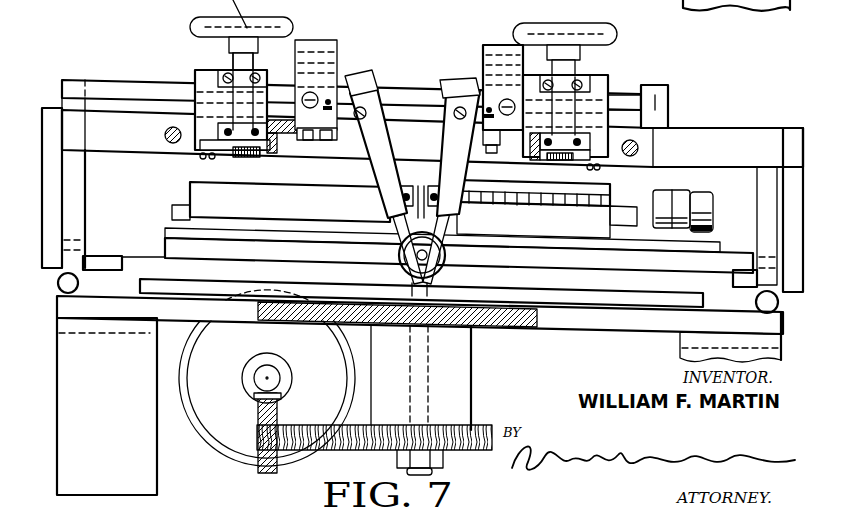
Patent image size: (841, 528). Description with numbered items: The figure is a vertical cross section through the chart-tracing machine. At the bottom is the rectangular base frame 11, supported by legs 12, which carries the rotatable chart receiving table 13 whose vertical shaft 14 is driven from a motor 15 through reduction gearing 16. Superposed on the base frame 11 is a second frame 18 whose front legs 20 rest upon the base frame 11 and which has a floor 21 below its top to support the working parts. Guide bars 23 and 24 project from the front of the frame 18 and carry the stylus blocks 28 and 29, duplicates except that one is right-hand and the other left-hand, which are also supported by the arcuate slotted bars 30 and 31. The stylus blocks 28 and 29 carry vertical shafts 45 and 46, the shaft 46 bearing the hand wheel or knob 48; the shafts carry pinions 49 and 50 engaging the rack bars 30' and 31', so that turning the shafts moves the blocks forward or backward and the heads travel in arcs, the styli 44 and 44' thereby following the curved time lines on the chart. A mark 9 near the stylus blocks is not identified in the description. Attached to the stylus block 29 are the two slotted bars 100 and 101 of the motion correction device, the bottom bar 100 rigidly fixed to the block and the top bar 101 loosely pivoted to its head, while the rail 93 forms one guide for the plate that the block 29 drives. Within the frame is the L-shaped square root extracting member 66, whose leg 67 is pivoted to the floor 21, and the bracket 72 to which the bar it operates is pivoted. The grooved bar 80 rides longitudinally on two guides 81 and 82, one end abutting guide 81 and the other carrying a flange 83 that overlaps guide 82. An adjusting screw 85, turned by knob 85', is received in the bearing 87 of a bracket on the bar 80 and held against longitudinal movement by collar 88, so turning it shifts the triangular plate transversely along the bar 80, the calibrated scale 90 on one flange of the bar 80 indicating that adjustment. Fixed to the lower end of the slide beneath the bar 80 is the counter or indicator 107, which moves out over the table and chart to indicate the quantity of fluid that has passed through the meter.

The second frame 18 is at (65, 130).
The guide bar 23 is at (170, 128).
The vertical shaft 45 is at (238, 103).
The stylus block 28 is at (213, 75).
The adjustment dimension 9 is at (276, 114).
The stylus 44 is at (393, 170).
The stylus 44' is at (451, 165).
The top slotted bar 101 is at (502, 48).
The bottom slotted bar 100 is at (532, 73).
The hand wheel or knob 48 is at (597, 36).
The stylus block 29 is at (597, 84).
The vertical shaft 46 is at (563, 120).
The rail 93 is at (665, 88).
The collar 88 is at (655, 180).
The pinion 50 is at (592, 148).
The adjusting screw 85 is at (707, 160).
The bearing 87 is at (691, 190).
The knob 85' is at (719, 212).
The legs 20 is at (78, 190).
The pinion 49 is at (243, 157).
The arcuate slotted bar 30 is at (302, 111).
The rack bar 30' is at (194, 189).
The grooved bar 80 is at (358, 204).
The arcuate slotted bar 31 is at (533, 183).
The rack bar 31' is at (533, 200).
The guide bar 24 is at (627, 207).
The guide 81 is at (175, 240).
The bracket 72 is at (240, 232).
The square root extracting member 66 is at (322, 240).
The counter or indicator 107 is at (402, 266).
The calibrated scale 90 is at (492, 235).
The guide 82 is at (562, 236).
The floor 21 is at (597, 258).
The flange 83 is at (598, 236).
The leg 67 is at (677, 247).
The rectangular base frame 11 is at (80, 304).
The legs 12 is at (80, 357).
The rotatable chart receiving table 13 is at (580, 296).
The vertical shaft 14 is at (427, 353).
The motor 15 is at (210, 415).
The reduction gearing 16 is at (257, 423).